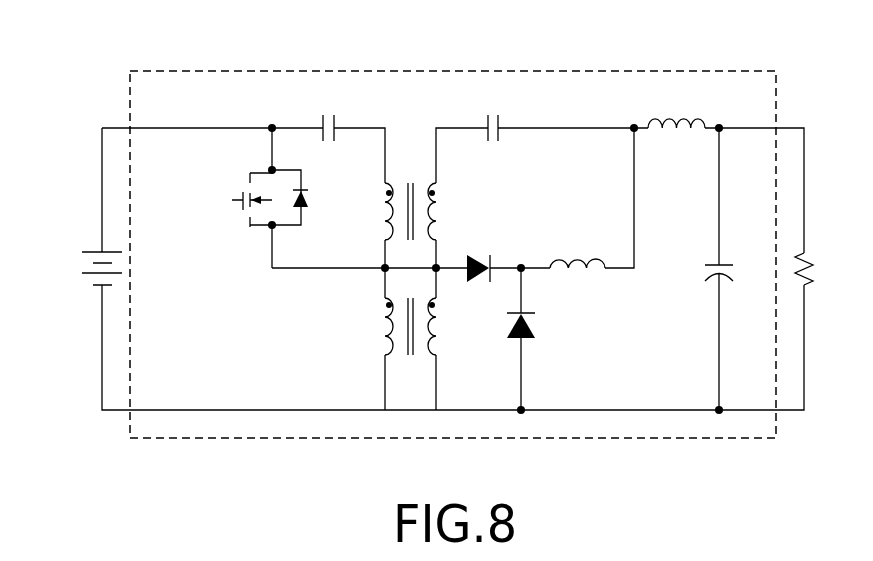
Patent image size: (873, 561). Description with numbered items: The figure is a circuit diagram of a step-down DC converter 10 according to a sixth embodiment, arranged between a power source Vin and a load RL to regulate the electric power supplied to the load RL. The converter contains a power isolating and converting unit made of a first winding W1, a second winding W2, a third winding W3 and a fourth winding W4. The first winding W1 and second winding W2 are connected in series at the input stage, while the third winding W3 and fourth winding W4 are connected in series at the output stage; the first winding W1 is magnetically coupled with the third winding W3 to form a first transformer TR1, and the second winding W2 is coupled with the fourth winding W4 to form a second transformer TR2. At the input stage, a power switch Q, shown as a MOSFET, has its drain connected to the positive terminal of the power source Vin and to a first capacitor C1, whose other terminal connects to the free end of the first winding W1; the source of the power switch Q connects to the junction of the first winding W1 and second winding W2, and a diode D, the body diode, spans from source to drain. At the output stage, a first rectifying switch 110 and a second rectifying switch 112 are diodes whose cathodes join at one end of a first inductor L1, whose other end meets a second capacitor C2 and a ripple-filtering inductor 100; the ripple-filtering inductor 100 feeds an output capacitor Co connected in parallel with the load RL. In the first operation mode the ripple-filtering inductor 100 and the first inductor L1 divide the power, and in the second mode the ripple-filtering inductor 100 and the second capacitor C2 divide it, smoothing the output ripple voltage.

The step-down DC converter 10 is at (452, 77).
The ripple-filtering inductor 100 is at (677, 118).
The first rectifying switch 110 is at (480, 256).
The second rectifying switch 112 is at (535, 328).
The first capacitor C1 is at (329, 114).
The second capacitor C2 is at (493, 114).
The power switch Q is at (241, 198).
The diode D is at (300, 197).
The first winding W1 is at (390, 205).
The second winding W2 is at (388, 335).
The third winding W3 is at (447, 202).
The fourth winding W4 is at (433, 335).
The first transformer TR1 is at (410, 166).
The second transformer TR2 is at (410, 374).
The first inductor L1 is at (577, 251).
The output capacitor Co is at (703, 269).
The load RL is at (821, 269).
The power source Vin is at (79, 268).